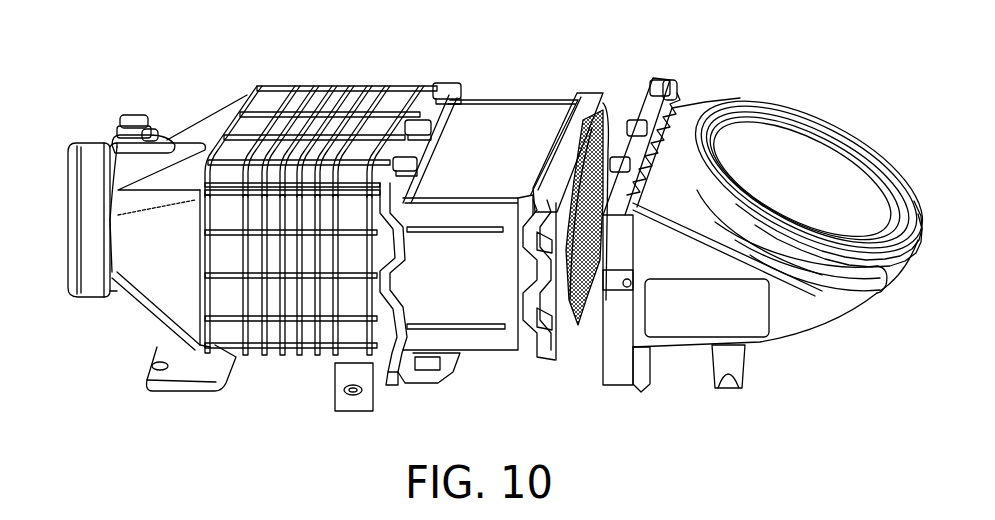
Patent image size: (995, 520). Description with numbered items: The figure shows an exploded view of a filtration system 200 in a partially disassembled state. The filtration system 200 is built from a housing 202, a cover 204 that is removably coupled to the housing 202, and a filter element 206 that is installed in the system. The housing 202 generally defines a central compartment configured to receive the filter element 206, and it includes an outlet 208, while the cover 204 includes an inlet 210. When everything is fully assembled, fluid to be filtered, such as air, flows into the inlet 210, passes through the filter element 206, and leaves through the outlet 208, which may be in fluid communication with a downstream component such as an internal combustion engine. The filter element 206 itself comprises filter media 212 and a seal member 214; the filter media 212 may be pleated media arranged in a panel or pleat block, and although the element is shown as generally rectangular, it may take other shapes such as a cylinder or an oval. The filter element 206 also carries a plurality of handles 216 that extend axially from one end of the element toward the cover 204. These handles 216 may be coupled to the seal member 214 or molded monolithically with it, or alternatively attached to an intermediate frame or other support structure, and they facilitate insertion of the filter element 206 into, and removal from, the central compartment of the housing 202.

The filtration system 200 is at (121, 74).
The housing 202 is at (353, 338).
The cover 204 is at (780, 320).
The filter element 206 is at (488, 345).
The outlet 208 is at (71, 233).
The inlet 210 is at (822, 160).
The filter media 212 is at (532, 115).
The seal member 214 is at (582, 88).
The handles 216 is at (565, 317).